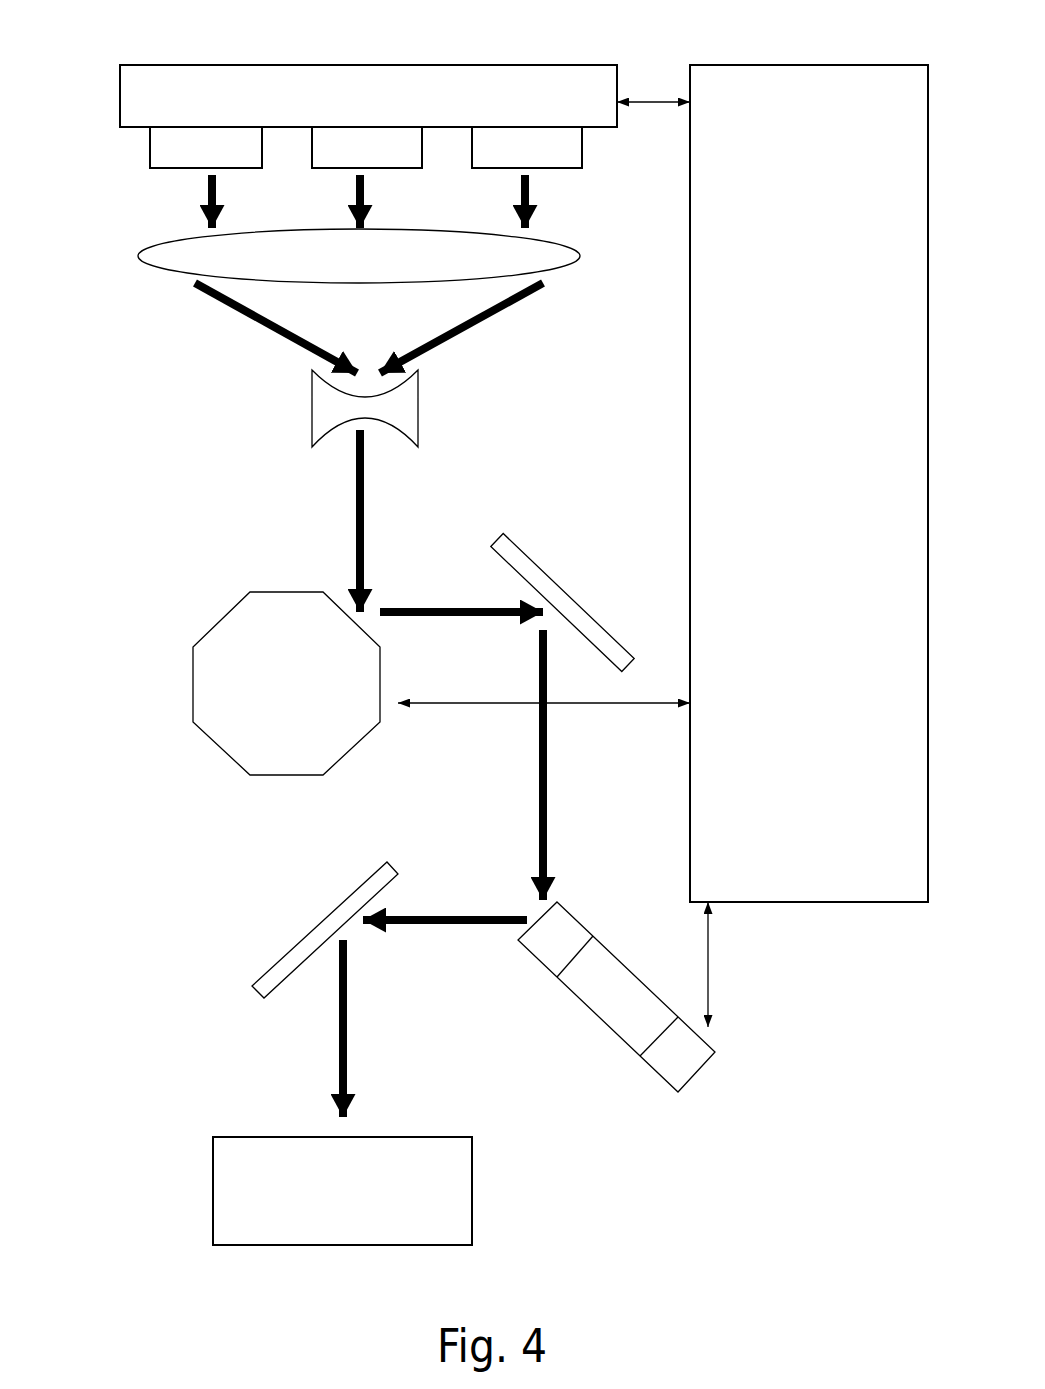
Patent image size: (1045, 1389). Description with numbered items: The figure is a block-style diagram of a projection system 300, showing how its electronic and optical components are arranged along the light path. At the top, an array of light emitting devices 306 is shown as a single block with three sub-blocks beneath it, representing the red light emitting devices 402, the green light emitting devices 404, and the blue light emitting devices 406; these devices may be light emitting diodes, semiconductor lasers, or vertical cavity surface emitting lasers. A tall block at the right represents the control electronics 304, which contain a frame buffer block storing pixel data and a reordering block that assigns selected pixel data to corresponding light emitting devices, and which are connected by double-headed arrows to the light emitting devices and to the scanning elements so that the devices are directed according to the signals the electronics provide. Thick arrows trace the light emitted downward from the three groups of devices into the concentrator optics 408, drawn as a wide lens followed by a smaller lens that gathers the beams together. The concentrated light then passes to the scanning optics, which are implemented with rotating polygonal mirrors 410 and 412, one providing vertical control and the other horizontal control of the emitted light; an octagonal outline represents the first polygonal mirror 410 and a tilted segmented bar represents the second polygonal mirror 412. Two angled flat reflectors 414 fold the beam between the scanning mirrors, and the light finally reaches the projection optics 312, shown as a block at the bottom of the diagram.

The projection system 300 is at (158, 45).
The array of light emitting devices 306 is at (580, 113).
The red light emitting devices 402 is at (230, 158).
The green light emitting devices 404 is at (391, 158).
The blue light emitting devices 406 is at (551, 158).
The control electronics 304 is at (833, 177).
The concentrator optics 408 is at (197, 458).
The polygonal mirror 410 is at (193, 657).
The mirror 414 is at (500, 542).
The polygonal mirror 412 is at (572, 995).
The projection optics 312 is at (422, 1217).